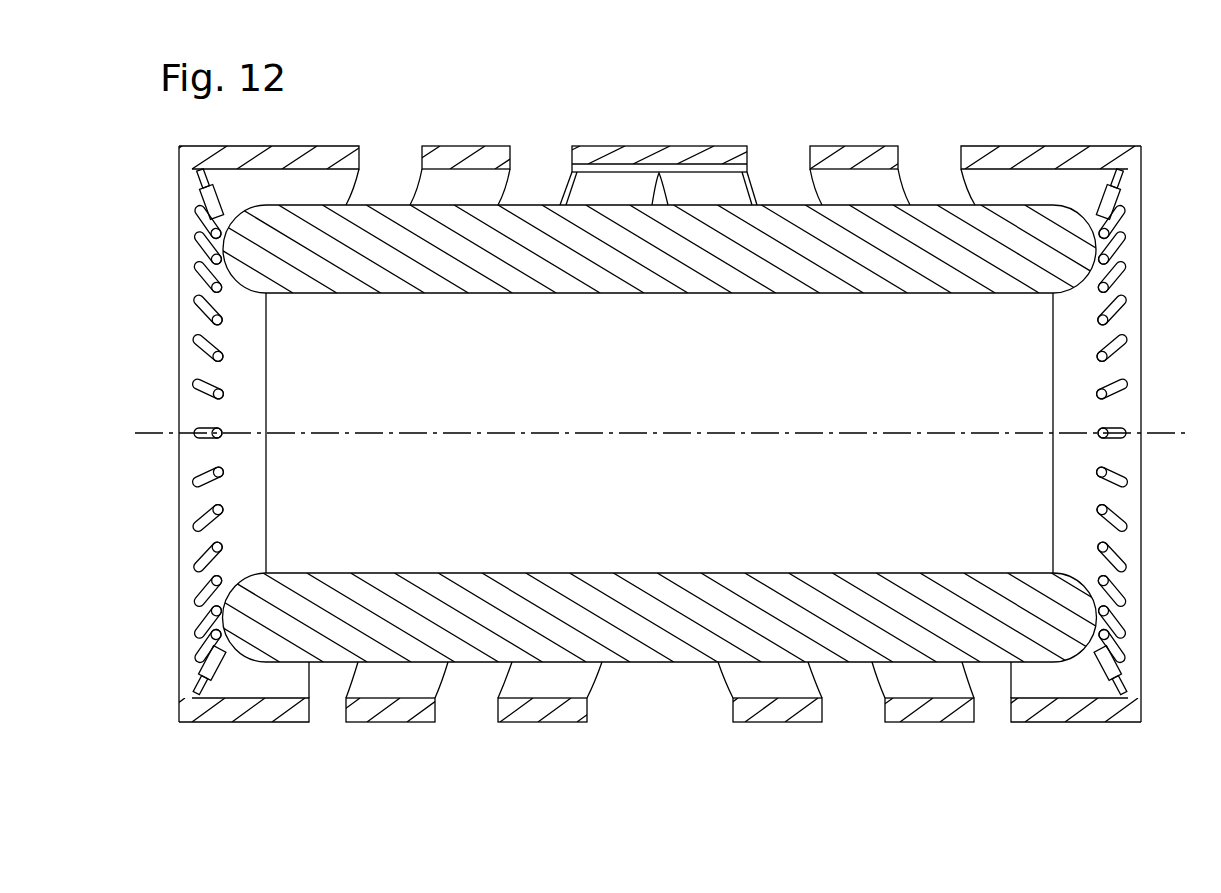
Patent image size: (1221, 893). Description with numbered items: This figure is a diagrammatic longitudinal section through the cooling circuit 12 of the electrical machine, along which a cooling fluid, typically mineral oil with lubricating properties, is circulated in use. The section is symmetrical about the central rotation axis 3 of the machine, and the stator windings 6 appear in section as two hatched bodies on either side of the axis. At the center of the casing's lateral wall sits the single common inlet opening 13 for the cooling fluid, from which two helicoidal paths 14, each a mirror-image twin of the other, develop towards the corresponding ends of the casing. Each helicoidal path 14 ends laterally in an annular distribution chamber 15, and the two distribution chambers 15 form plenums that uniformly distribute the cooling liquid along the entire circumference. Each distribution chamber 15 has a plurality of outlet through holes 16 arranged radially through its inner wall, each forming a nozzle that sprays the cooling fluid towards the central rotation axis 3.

The central rotation axis 3 is at (1012, 433).
The stator windings 6 is at (787, 242).
The cooling circuit 12 is at (697, 372).
The common inlet opening 13 is at (660, 144).
The helicoidal paths 14 is at (465, 152).
The distribution chambers 15 is at (248, 712).
The outlet through holes 16 is at (210, 675).